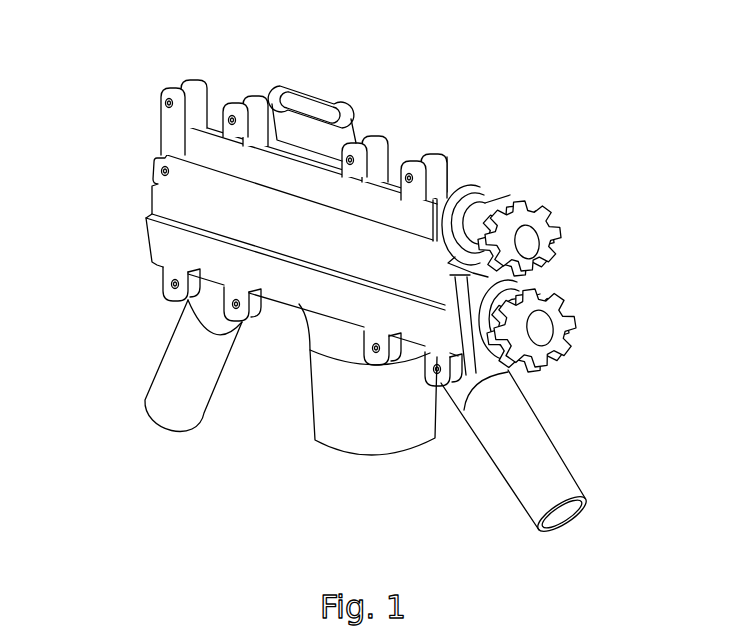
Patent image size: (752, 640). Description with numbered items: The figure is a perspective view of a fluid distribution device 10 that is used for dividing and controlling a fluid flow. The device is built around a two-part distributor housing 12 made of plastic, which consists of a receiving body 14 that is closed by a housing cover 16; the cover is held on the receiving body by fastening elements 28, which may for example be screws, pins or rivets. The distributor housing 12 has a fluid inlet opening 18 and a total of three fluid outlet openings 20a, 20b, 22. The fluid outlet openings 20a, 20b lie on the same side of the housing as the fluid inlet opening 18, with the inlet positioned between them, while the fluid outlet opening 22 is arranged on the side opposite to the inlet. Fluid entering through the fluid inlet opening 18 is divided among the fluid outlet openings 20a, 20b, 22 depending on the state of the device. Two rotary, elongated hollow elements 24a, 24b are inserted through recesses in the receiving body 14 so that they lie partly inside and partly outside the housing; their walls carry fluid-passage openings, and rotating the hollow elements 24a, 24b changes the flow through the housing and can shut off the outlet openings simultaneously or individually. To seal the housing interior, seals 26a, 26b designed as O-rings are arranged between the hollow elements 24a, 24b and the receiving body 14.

The fluid distribution device 10 is at (465, 99).
The distributor housing 12 is at (133, 171).
The receiving body 14 is at (323, 340).
The housing cover 16 is at (389, 197).
The fluid inlet opening 18 is at (378, 474).
The fluid outlet opening 20a is at (154, 452).
The fluid outlet opening 20b is at (573, 513).
The fluid outlet opening 22 is at (308, 105).
The hollow element 24a is at (566, 318).
The hollow element 24b is at (546, 202).
The seal 26a is at (538, 302).
The seal 26b is at (453, 193).
The fastening elements 28 is at (222, 110).